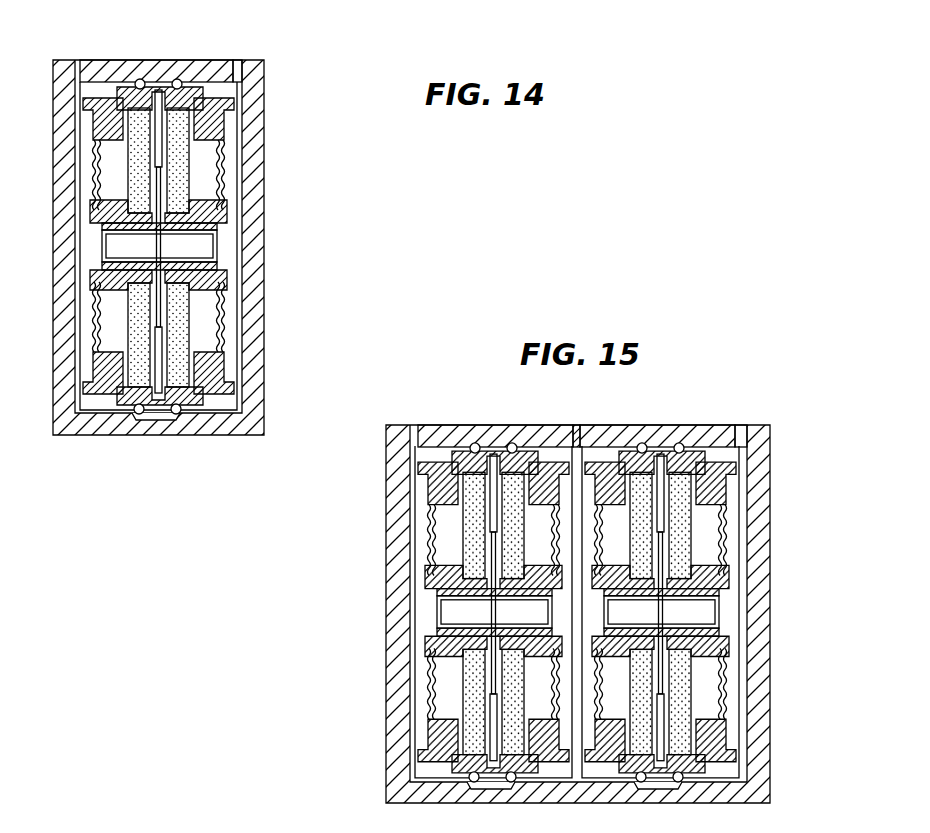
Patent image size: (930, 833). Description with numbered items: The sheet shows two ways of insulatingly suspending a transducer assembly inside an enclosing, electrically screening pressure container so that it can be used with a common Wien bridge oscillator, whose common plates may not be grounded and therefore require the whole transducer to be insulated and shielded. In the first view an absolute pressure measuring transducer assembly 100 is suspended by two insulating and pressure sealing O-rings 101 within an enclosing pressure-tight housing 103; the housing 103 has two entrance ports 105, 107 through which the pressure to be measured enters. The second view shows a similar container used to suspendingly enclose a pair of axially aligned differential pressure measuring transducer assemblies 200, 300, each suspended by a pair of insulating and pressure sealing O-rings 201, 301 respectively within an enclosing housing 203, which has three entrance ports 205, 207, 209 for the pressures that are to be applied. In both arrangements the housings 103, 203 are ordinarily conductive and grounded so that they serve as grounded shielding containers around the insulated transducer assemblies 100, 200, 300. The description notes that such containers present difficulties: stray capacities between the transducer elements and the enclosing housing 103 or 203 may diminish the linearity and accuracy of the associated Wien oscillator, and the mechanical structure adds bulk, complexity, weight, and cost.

In FIG. 14, the absolute pressure measuring transducer assembly 100 is at (102, 82).
In FIG. 14, the insulating and pressure sealing O-rings 101 is at (178, 79).
In FIG. 14, the pressure-tight housing 103 is at (258, 247).
In FIG. 14, the entrance port 105 is at (80, 60).
In FIG. 14, the entrance port 107 is at (240, 60).
In FIG. 15, the differential pressure measuring transducer assembly 200 is at (548, 446).
In FIG. 15, the insulating and pressure sealing O-rings 201 is at (511, 442).
In FIG. 15, the enclosing housing 203 is at (762, 494).
In FIG. 15, the entrance port 205 is at (416, 430).
In FIG. 15, the entrance port 207 is at (742, 428).
In FIG. 15, the entrance port 209 is at (578, 427).
In FIG. 15, the differential pressure measuring transducer assembly 300 is at (623, 440).
In FIG. 15, the insulating and pressure sealing O-rings 301 is at (679, 441).